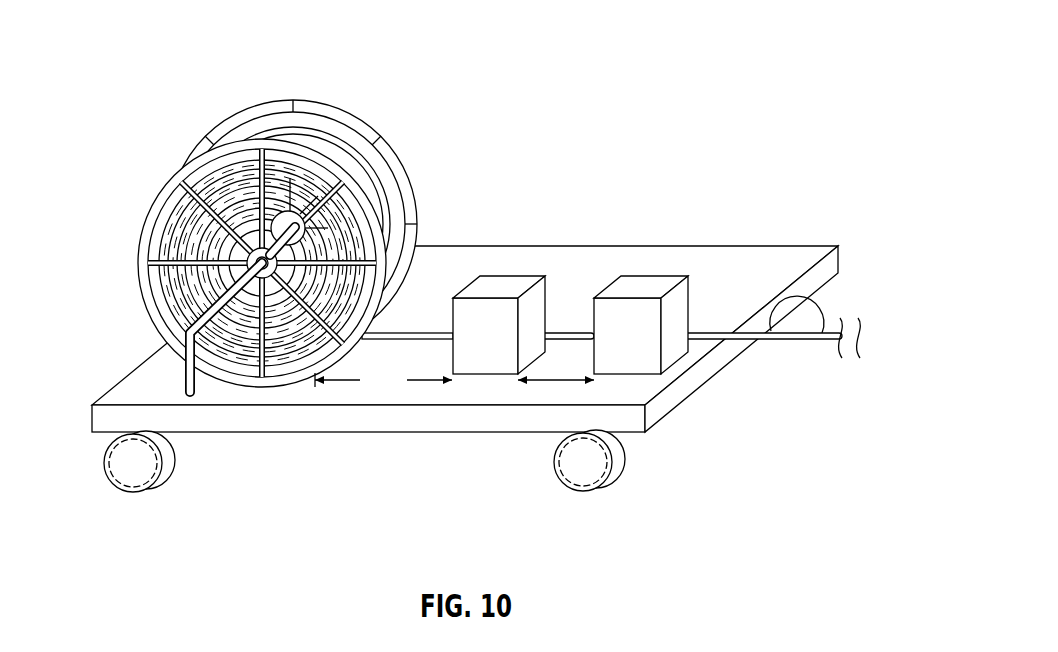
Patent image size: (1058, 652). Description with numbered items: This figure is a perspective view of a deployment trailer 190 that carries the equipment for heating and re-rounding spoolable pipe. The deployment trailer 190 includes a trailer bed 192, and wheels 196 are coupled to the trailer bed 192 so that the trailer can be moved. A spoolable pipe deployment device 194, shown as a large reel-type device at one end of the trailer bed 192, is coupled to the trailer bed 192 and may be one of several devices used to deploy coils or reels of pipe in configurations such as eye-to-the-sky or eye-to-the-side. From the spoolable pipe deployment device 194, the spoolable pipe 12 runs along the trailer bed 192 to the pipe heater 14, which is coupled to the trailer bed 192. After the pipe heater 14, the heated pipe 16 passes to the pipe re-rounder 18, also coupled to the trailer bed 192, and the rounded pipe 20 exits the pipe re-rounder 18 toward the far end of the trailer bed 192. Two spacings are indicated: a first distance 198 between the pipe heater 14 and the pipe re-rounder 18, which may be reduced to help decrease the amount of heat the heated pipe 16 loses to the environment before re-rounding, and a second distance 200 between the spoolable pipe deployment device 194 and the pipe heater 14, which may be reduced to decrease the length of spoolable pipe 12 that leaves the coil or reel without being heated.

The deployment trailer 190 is at (443, 288).
The trailer bed 192 is at (790, 245).
The spoolable pipe deployment device 194 is at (110, 244).
The wheels 196 is at (133, 492).
The first distance 198 is at (557, 382).
The second distance 200 is at (383, 383).
The spoolable pipe 12 is at (413, 330).
The pipe heater 14 is at (512, 278).
The heated pipe 16 is at (562, 331).
The pipe re-rounder 18 is at (655, 278).
The rounded pipe 20 is at (797, 342).